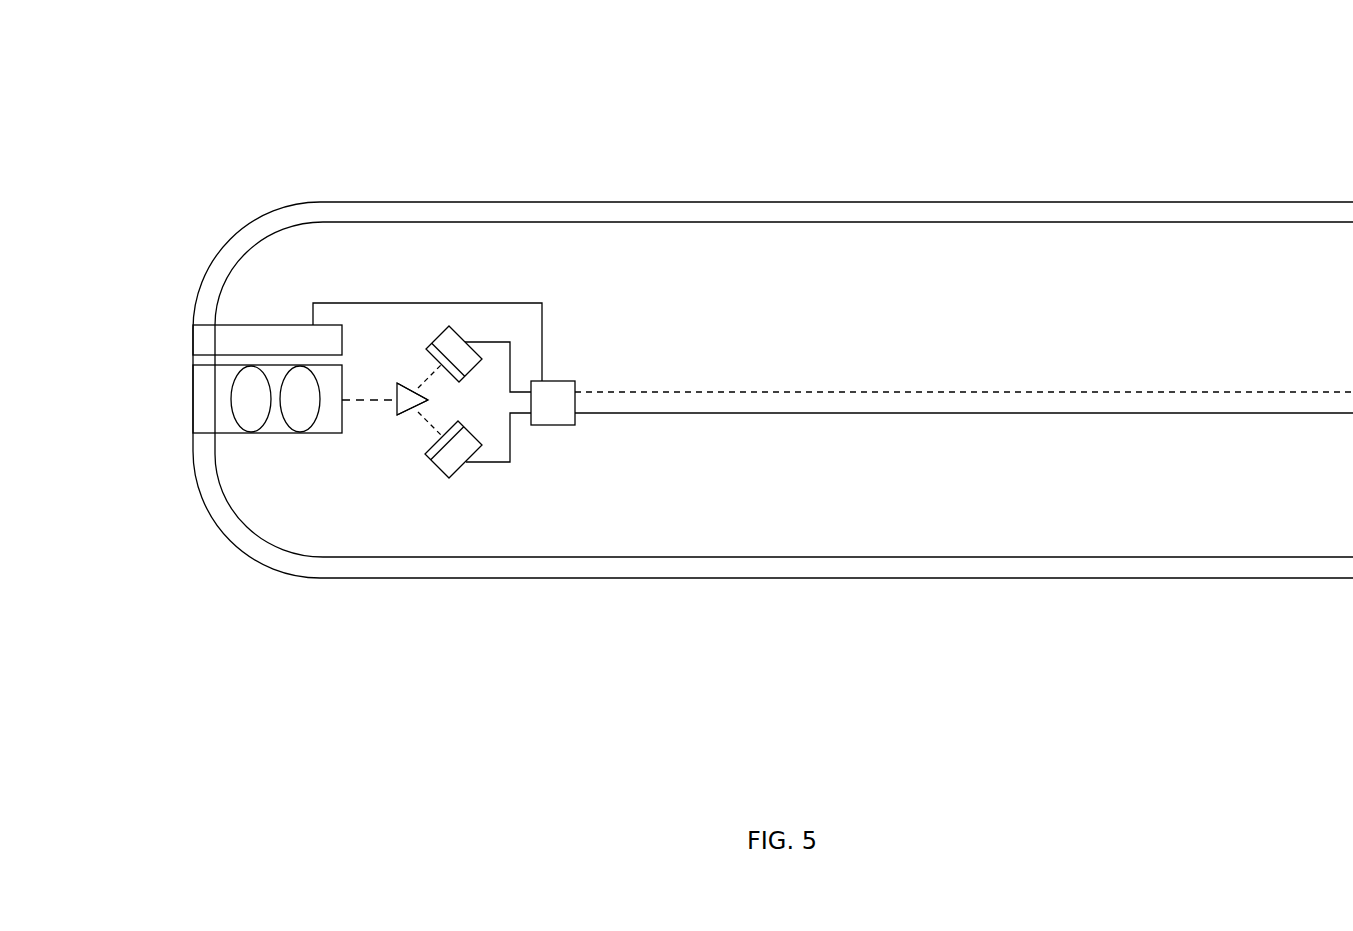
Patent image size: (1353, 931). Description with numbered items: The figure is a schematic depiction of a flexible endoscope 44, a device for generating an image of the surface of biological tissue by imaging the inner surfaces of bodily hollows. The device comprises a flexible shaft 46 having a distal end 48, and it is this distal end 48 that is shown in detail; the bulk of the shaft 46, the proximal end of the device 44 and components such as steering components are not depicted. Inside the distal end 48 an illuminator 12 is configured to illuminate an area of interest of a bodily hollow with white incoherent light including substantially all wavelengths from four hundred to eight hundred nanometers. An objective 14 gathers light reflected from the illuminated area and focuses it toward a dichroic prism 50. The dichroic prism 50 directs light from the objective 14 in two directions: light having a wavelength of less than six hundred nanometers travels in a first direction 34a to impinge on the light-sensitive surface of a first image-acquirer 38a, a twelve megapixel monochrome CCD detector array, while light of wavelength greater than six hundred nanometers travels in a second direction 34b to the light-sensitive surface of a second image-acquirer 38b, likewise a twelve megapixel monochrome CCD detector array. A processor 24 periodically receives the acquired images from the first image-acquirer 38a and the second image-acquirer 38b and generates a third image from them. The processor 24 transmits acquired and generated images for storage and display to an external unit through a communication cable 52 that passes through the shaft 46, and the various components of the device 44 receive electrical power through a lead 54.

The illuminator 12 is at (193, 334).
The objective 14 is at (193, 400).
The processor 24 is at (547, 381).
The first direction 34a is at (430, 381).
The second direction 34b is at (427, 418).
The first image-acquirer 38a is at (465, 336).
The second image-acquirer 38b is at (460, 468).
The flexible endoscope 44 is at (252, 657).
The flexible shaft 46 is at (722, 202).
The distal end 48 is at (242, 131).
The dichroic prism 50 is at (408, 416).
The communication cable 52 is at (738, 390).
The lead 54 is at (738, 413).